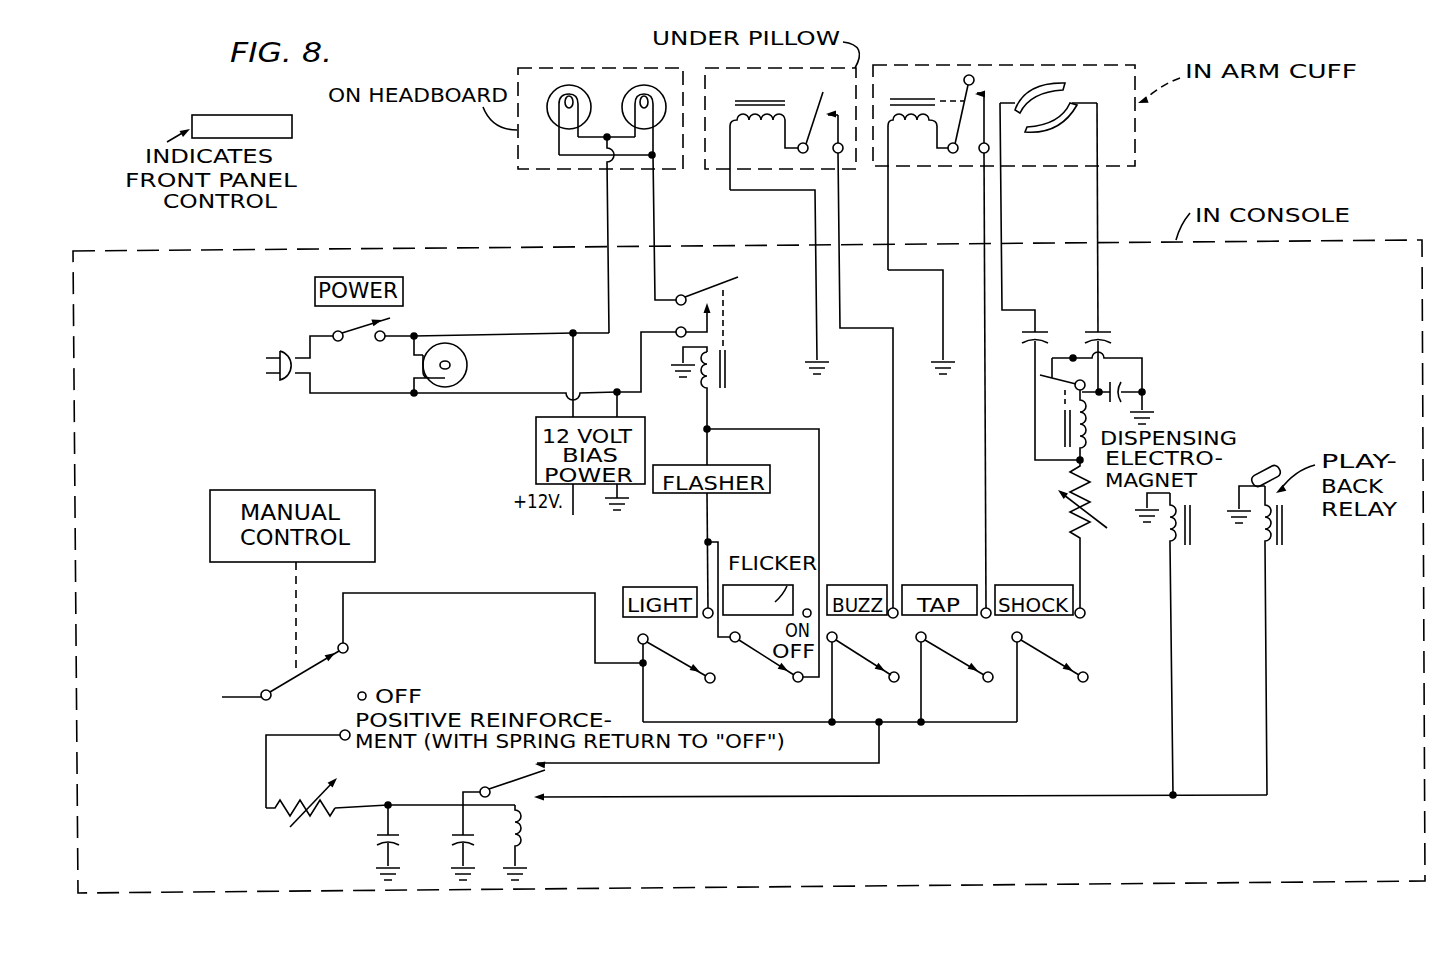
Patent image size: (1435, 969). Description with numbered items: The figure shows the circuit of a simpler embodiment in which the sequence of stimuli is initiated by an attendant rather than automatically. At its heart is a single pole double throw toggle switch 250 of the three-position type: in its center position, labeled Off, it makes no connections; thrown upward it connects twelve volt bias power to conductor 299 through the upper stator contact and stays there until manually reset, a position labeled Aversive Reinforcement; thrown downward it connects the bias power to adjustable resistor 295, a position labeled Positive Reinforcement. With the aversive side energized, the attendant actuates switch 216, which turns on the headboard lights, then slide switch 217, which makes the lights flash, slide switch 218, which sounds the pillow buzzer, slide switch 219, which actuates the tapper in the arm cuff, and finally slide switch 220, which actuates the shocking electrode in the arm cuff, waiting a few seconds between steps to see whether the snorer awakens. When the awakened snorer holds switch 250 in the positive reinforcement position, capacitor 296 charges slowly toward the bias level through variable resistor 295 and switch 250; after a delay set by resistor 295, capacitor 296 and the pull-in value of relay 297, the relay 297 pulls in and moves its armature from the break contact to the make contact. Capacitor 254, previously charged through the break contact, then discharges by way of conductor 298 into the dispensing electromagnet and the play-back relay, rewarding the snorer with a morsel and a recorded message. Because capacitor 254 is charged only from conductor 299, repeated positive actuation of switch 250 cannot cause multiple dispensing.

The single pole double throw toggle switch 250 is at (283, 669).
The conductor 299 is at (455, 593).
The switch 216 is at (670, 658).
The slide switch 217 is at (757, 657).
The slide switch 218 is at (858, 657).
The slide switch 219 is at (947, 657).
The slide switch 220 is at (1047, 657).
The adjustable resistor 295 is at (336, 811).
The capacitor 296 is at (383, 840).
The capacitor 254 is at (460, 838).
The relay 297 is at (536, 823).
The conductor 298 is at (1030, 800).